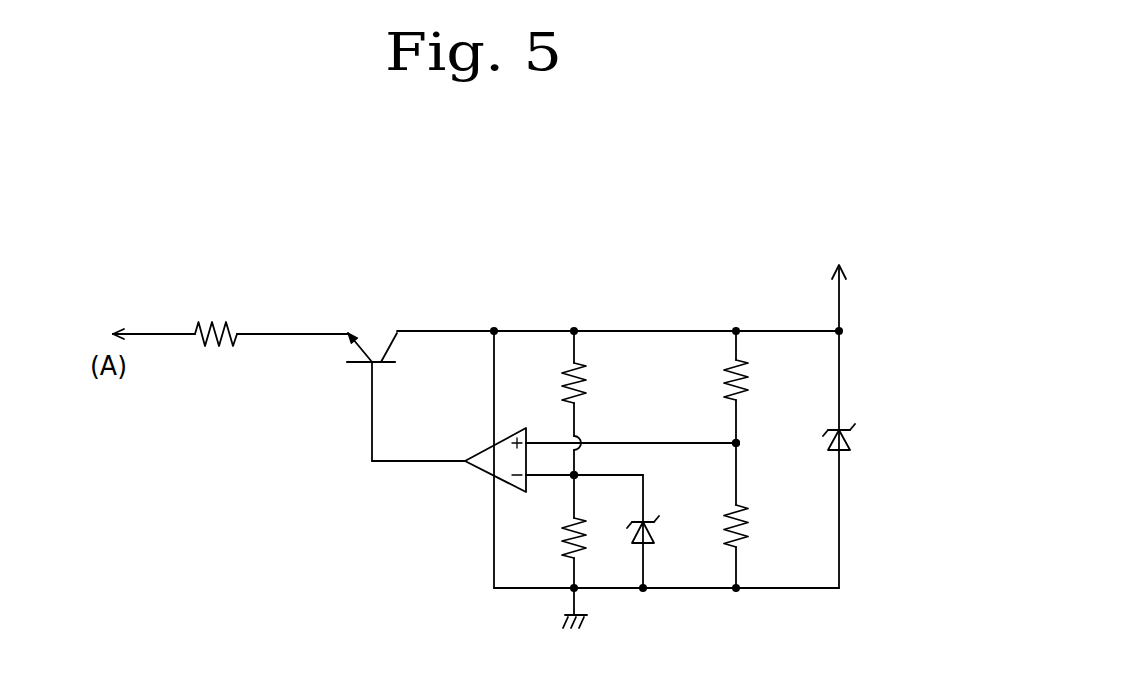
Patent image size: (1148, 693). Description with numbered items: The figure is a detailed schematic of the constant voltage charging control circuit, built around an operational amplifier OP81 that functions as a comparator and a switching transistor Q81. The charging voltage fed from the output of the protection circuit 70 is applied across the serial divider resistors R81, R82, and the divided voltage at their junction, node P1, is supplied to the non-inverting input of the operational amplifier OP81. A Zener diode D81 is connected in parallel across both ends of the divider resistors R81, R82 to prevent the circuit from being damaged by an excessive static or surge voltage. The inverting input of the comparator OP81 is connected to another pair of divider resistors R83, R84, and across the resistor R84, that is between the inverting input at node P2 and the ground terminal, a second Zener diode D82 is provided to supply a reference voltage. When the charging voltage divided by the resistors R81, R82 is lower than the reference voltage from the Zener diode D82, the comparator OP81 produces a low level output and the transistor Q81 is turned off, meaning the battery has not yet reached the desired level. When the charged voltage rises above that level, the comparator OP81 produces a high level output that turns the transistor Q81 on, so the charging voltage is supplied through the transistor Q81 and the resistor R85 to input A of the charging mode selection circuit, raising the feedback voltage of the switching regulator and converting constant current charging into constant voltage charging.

The protection circuit 70 is at (826, 265).
The resistor R85 is at (216, 316).
The switching transistor Q81 is at (395, 362).
The operational amplifier OP81 is at (483, 473).
The divider resistor R83 is at (598, 383).
The divider resistor R84 is at (549, 538).
The divider resistor R81 is at (760, 380).
The divider resistor R82 is at (762, 526).
The node P1 is at (741, 443).
The node P2 is at (578, 471).
The Zener diode D81 is at (864, 440).
The Zener diode D82 is at (668, 532).